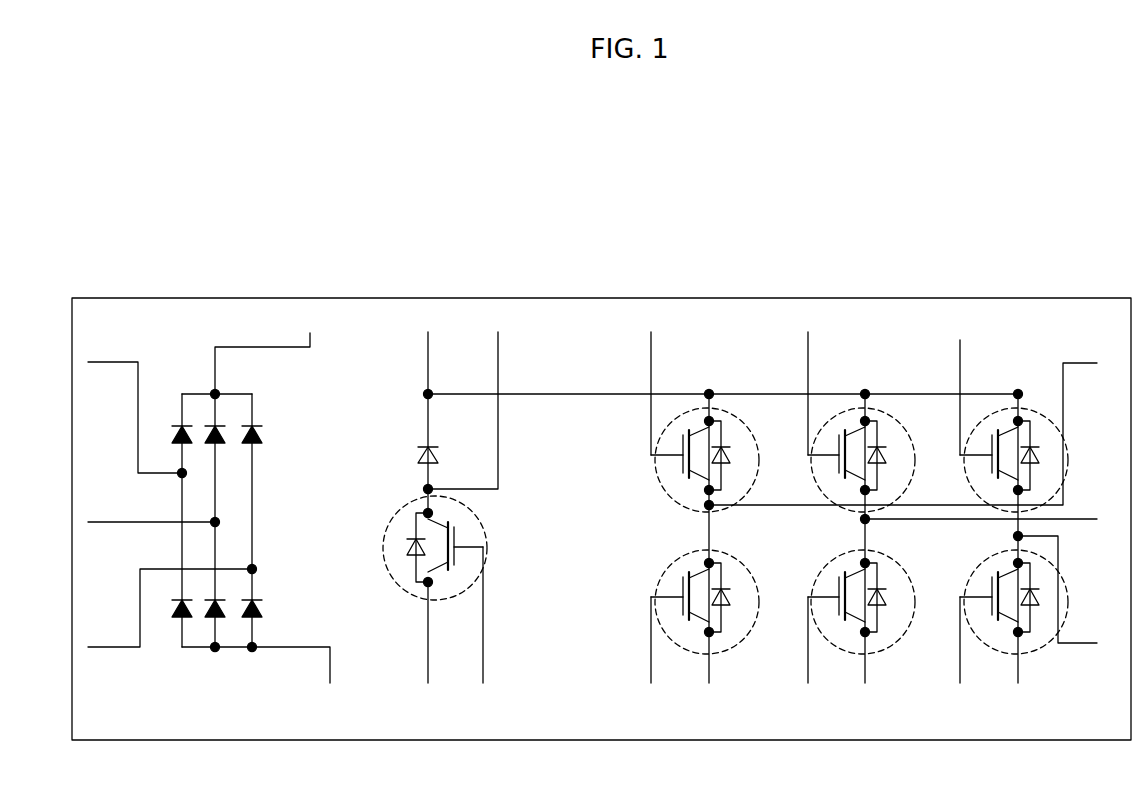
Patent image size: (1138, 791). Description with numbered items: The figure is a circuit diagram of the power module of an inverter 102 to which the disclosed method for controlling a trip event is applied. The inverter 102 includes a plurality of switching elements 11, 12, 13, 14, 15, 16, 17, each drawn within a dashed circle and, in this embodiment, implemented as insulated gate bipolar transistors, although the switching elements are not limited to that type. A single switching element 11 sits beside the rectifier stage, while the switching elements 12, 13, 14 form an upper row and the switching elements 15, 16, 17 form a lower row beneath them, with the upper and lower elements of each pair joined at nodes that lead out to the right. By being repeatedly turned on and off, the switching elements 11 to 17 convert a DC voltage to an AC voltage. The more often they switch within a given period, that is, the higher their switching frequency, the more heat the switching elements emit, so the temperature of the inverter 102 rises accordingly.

The inverter 102 is at (941, 297).
The switching element 11 is at (488, 548).
The switching element 12 is at (751, 418).
The switching element 13 is at (907, 418).
The switching element 14 is at (1060, 418).
The switching element 15 is at (661, 576).
The switching element 16 is at (818, 576).
The switching element 17 is at (974, 576).